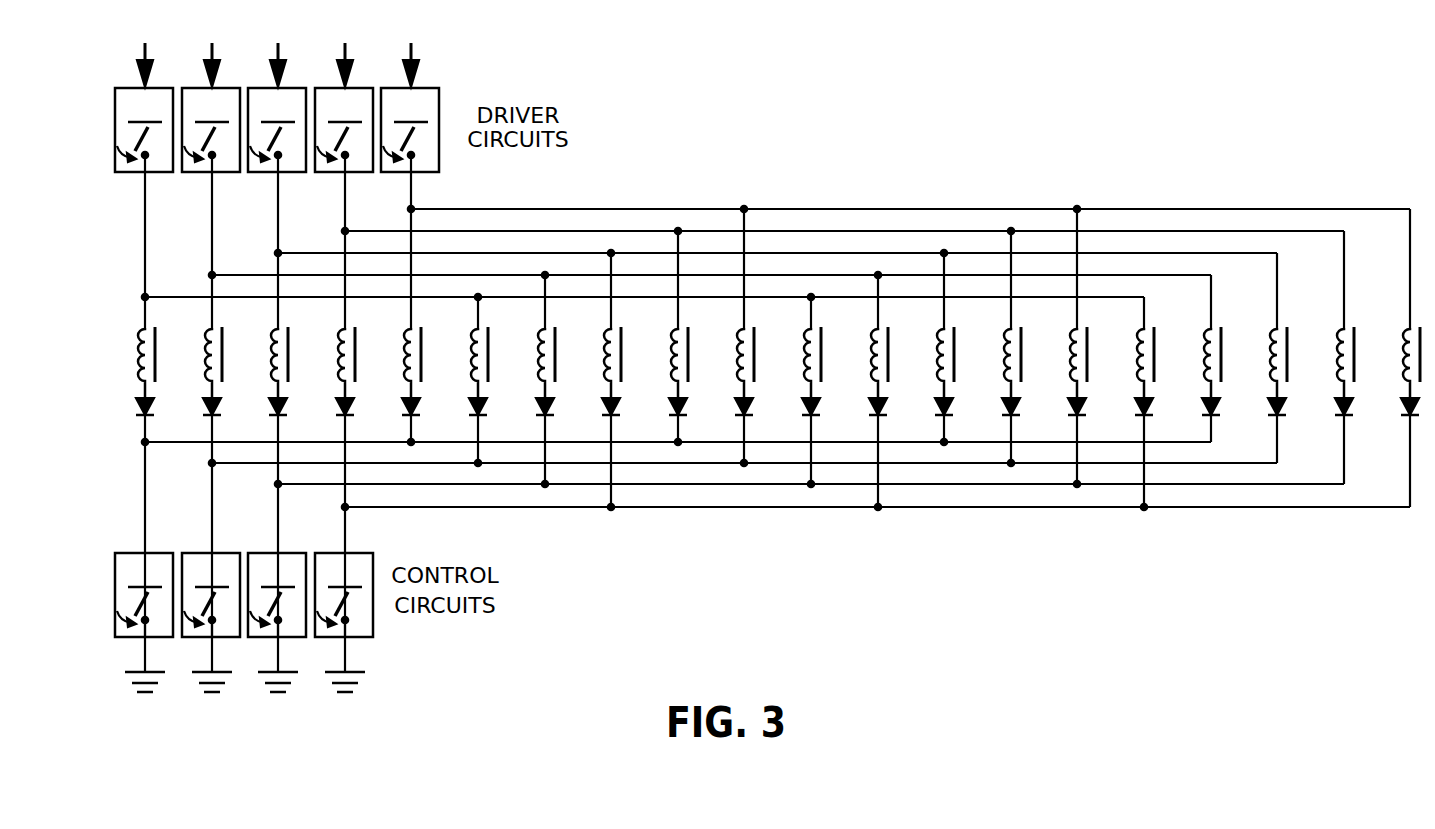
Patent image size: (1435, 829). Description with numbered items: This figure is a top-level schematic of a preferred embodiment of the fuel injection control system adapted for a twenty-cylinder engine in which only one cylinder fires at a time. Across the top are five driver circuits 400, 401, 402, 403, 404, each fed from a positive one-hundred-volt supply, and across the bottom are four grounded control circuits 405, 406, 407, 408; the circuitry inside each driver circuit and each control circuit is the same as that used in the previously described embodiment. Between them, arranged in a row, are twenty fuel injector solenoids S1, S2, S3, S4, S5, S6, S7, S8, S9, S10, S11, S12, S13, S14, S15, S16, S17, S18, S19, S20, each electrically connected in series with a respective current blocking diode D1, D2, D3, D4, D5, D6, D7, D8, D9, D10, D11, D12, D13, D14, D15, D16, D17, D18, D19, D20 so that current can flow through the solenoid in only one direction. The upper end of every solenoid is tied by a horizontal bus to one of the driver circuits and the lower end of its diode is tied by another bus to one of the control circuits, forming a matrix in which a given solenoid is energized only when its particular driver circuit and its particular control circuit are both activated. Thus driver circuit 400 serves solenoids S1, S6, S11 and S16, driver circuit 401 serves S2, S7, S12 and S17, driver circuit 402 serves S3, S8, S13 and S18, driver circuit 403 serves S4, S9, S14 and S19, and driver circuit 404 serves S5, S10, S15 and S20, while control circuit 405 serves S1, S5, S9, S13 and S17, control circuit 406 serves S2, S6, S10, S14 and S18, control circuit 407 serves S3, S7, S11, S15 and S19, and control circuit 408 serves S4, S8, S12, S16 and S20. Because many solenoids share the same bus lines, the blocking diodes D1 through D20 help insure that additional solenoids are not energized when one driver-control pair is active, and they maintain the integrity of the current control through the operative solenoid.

The driver circuit 400 is at (137, 172).
The driver circuit 401 is at (204, 172).
The driver circuit 402 is at (270, 172).
The driver circuit 403 is at (337, 172).
The driver circuit 404 is at (403, 172).
The control circuit 405 is at (137, 552).
The control circuit 406 is at (204, 552).
The control circuit 407 is at (270, 552).
The control circuit 408 is at (337, 552).
The solenoid S1 is at (133, 346).
The solenoid S2 is at (200, 335).
The solenoid S3 is at (266, 324).
The solenoid S4 is at (333, 313).
The solenoid S5 is at (399, 302).
The solenoid S6 is at (466, 346).
The solenoid S7 is at (533, 335).
The solenoid S8 is at (599, 324).
The solenoid S9 is at (666, 313).
The solenoid S10 is at (726, 302).
The solenoid S11 is at (793, 346).
The solenoid S12 is at (860, 335).
The solenoid S13 is at (926, 324).
The solenoid S14 is at (993, 313).
The solenoid S15 is at (1059, 302).
The solenoid S16 is at (1126, 347).
The solenoid S17 is at (1193, 336).
The solenoid S18 is at (1259, 325).
The solenoid S19 is at (1326, 314).
The solenoid S20 is at (1392, 303).
The current blocking diode D1 is at (131, 420).
The current blocking diode D2 is at (198, 431).
The current blocking diode D3 is at (264, 441).
The current blocking diode D4 is at (331, 453).
The current blocking diode D5 is at (397, 420).
The current blocking diode D6 is at (464, 431).
The current blocking diode D7 is at (531, 441).
The current blocking diode D8 is at (597, 453).
The diode D9 is at (664, 420).
The diode D10 is at (723, 431).
The diode D11 is at (790, 441).
The diode D12 is at (857, 453).
The diode D13 is at (923, 420).
The diode D14 is at (990, 431).
The diode D15 is at (1056, 441).
The diode D16 is at (1123, 453).
The diode D17 is at (1190, 419).
The diode D18 is at (1256, 429).
The diode D19 is at (1323, 440).
The diode D20 is at (1389, 451).